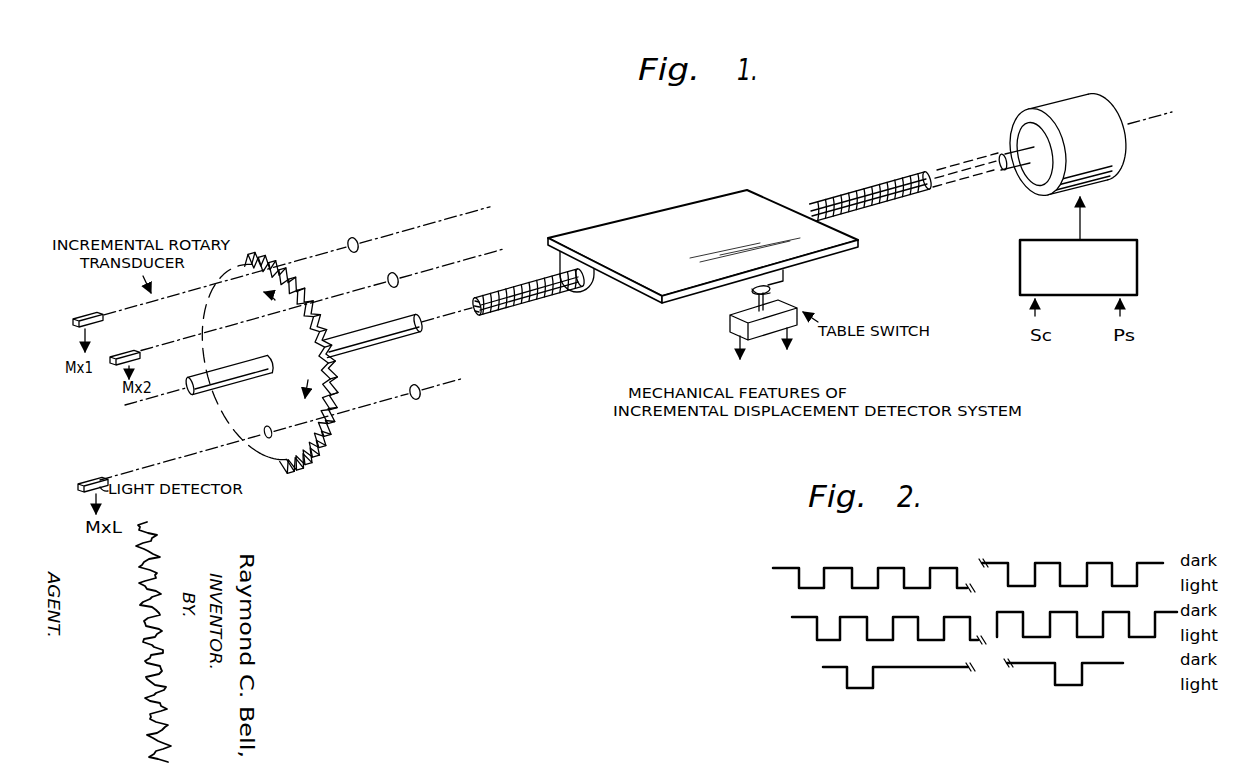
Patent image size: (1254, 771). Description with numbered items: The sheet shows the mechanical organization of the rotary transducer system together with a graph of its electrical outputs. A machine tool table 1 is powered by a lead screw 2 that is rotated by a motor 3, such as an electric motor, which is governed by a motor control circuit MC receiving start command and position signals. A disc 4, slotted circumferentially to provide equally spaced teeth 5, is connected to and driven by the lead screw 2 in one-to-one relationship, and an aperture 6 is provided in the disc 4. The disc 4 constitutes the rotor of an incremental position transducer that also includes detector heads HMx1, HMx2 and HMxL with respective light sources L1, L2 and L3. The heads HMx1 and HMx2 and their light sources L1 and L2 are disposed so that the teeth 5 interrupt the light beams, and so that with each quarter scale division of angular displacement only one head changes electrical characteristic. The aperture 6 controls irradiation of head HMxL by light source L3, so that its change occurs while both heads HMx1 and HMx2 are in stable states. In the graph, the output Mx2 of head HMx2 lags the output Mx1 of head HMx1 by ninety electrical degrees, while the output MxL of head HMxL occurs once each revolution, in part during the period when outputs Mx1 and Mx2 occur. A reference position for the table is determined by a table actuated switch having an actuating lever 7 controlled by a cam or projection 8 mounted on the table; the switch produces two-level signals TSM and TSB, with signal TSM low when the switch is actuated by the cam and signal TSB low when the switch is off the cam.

In FIG. 1, the machine tool table 1 is at (734, 199).
In FIG. 1, the lead screw 2 is at (903, 190).
In FIG. 1, the motor 3 is at (1038, 137).
In FIG. 1, the disc 4 is at (248, 262).
In FIG. 1, the teeth 5 is at (333, 416).
In FIG. 1, the aperture 6 is at (269, 438).
In FIG. 1, the actuating lever 7 is at (775, 290).
In FIG. 1, the cam or projection 8 is at (751, 283).
In FIG. 1, the light source L1 is at (356, 239).
In FIG. 1, the light source L2 is at (397, 285).
In FIG. 1, the light source L3 is at (418, 386).
In FIG. 1, the detector head HMx1 is at (92, 312).
In FIG. 1, the detector head HMx2 is at (129, 352).
In FIG. 1, the detector head HMxL is at (92, 476).
In FIG. 1, the motor control circuit MC is at (1138, 276).
In FIG. 1, the signal TSM is at (743, 360).
In FIG. 1, the signal TSB is at (792, 351).
In FIG. 2, the output Mx1 is at (950, 577).
In FIG. 2, the output Mx2 is at (957, 628).
In FIG. 2, the output MxL is at (932, 677).